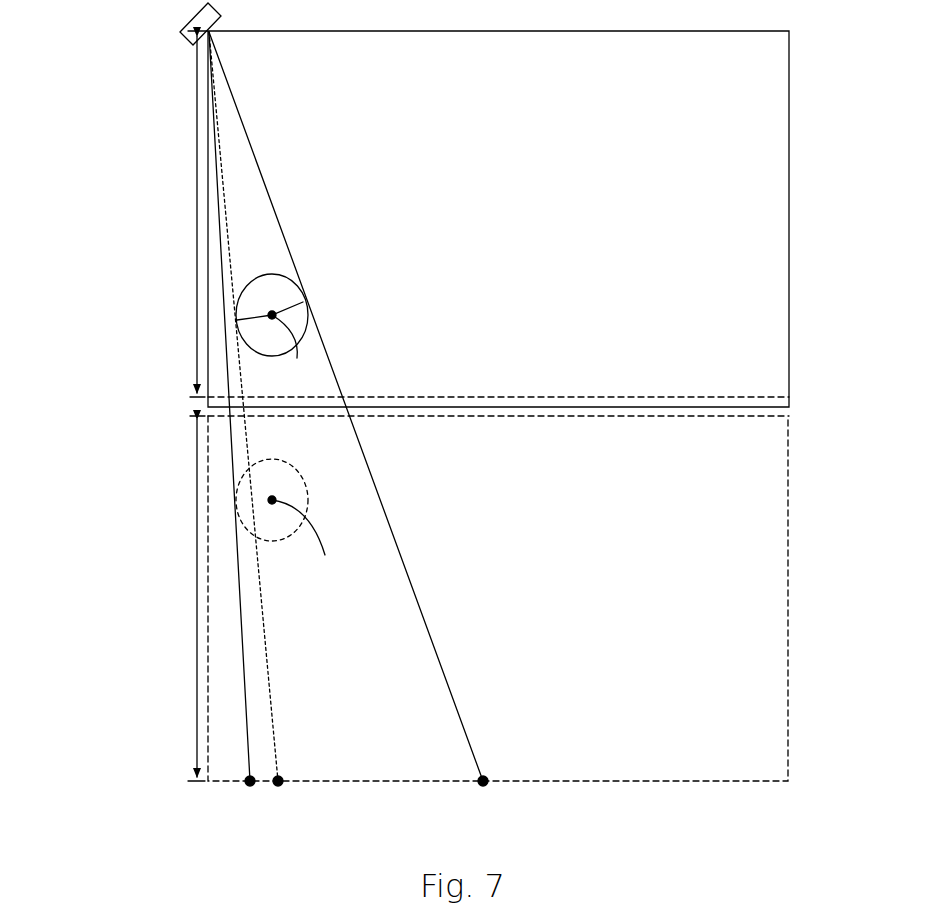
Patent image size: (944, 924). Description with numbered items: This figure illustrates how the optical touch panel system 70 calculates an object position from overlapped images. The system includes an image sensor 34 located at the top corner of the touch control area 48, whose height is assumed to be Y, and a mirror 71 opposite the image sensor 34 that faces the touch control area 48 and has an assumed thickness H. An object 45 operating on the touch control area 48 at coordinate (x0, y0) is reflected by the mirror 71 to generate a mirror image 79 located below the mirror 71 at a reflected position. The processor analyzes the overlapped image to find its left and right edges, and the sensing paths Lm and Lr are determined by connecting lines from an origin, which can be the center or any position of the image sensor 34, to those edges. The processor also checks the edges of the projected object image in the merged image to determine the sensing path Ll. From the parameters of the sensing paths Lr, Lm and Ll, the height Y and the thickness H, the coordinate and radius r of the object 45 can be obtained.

The optical touch panel system 70 is at (110, 177).
The image sensor 34 is at (191, 40).
The touch control area 48 is at (742, 225).
The object 45 is at (245, 286).
The mirror 71 is at (208, 404).
The mirror image 79 is at (240, 482).